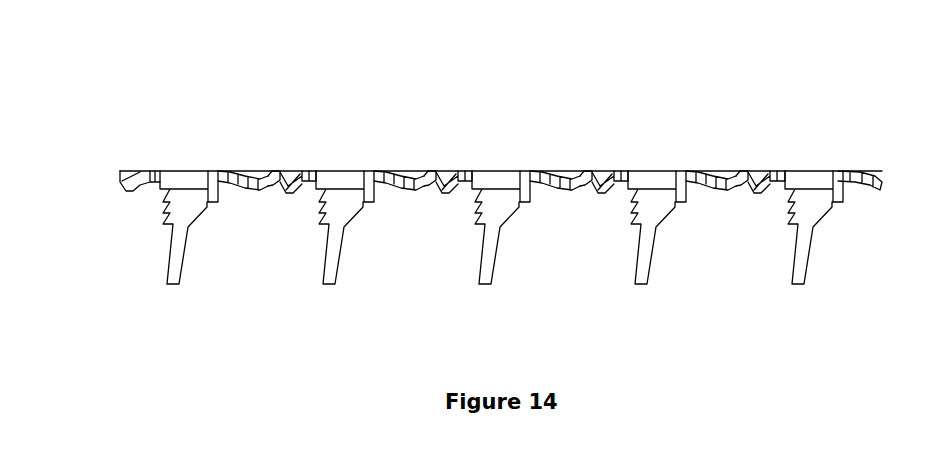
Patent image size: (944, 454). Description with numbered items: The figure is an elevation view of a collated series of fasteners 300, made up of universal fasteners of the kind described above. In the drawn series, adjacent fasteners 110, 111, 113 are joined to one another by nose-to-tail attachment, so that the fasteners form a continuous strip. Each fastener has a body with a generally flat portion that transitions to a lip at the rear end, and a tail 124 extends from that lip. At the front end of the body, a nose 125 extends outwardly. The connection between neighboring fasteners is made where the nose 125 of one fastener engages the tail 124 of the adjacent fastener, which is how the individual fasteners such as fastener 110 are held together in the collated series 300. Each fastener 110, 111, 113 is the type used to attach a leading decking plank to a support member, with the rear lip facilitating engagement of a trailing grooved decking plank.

The fastener 110 is at (655, 169).
The fastener 111 is at (185, 212).
The fastener 113 is at (809, 168).
The tail 124 is at (263, 178).
The nose 125 is at (270, 175).
The collated series of fasteners 300 is at (235, 275).